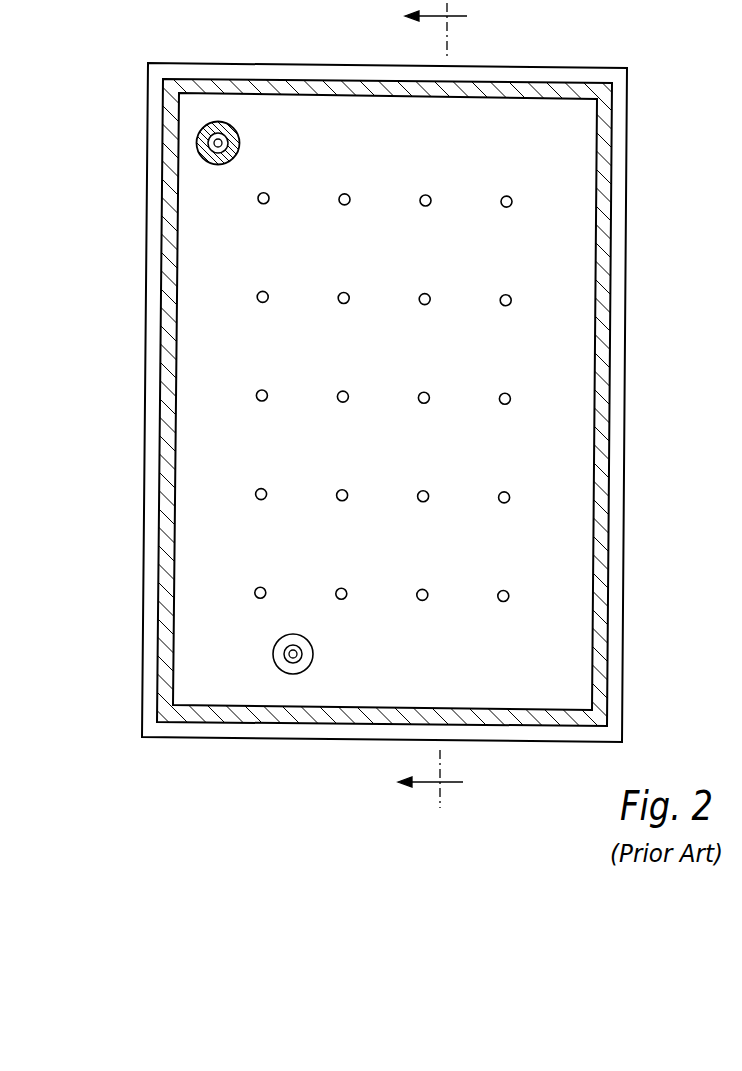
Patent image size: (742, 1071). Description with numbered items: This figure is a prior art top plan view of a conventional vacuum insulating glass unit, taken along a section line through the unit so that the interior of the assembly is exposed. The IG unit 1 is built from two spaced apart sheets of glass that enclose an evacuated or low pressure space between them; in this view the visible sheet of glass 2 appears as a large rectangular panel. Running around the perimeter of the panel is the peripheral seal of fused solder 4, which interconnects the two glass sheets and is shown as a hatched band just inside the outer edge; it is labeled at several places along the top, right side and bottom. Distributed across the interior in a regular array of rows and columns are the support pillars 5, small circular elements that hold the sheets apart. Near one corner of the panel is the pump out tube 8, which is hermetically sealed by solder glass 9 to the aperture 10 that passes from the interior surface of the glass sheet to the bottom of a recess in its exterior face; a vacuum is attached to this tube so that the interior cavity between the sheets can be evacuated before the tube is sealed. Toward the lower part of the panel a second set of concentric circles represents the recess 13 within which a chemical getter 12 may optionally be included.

The IG unit 1 is at (131, 606).
The sheet of glass 2 is at (350, 72).
The peripheral seal of fused solder 4 is at (253, 88).
The support pillars 5 is at (512, 298).
The pump out tube 8 is at (216, 133).
The solder glass 9 is at (218, 165).
The aperture 10 is at (215, 147).
The chemical getter 12 is at (291, 658).
The recess 13 is at (313, 653).